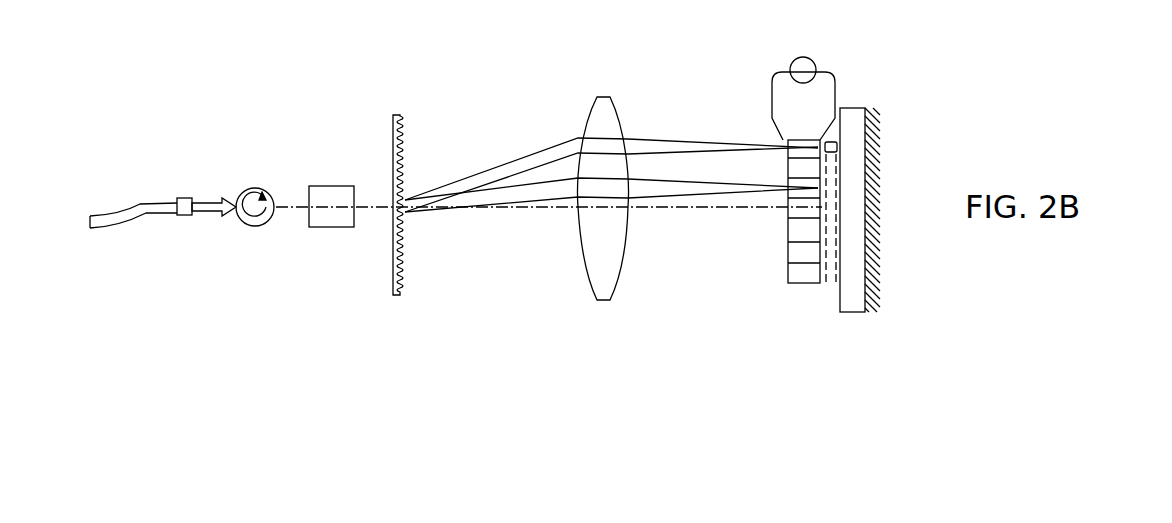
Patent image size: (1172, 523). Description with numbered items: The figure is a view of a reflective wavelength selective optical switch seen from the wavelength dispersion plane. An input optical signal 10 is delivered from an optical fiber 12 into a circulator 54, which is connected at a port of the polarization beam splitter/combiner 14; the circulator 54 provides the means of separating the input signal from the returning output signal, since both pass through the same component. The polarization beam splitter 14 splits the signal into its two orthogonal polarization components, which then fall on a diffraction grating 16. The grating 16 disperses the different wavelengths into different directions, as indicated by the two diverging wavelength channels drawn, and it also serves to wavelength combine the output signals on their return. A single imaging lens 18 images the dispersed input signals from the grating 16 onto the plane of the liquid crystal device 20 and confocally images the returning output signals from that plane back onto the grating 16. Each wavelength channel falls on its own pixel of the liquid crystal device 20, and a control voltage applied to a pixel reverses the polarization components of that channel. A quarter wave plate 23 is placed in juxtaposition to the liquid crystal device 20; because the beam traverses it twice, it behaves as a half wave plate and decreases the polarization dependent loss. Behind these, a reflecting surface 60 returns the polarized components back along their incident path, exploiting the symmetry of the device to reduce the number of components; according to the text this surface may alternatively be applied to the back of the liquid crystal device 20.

The input optical signal 10 is at (209, 203).
The optical fiber 12 is at (142, 213).
The circulator 54 is at (248, 226).
The polarization beam splitter 14 is at (322, 168).
The diffraction grating 16 is at (405, 118).
The imaging lens 18 is at (618, 275).
The liquid crystal device 20 is at (793, 283).
The quarter wave plate 23 is at (830, 283).
The reflecting surface 60 is at (848, 312).